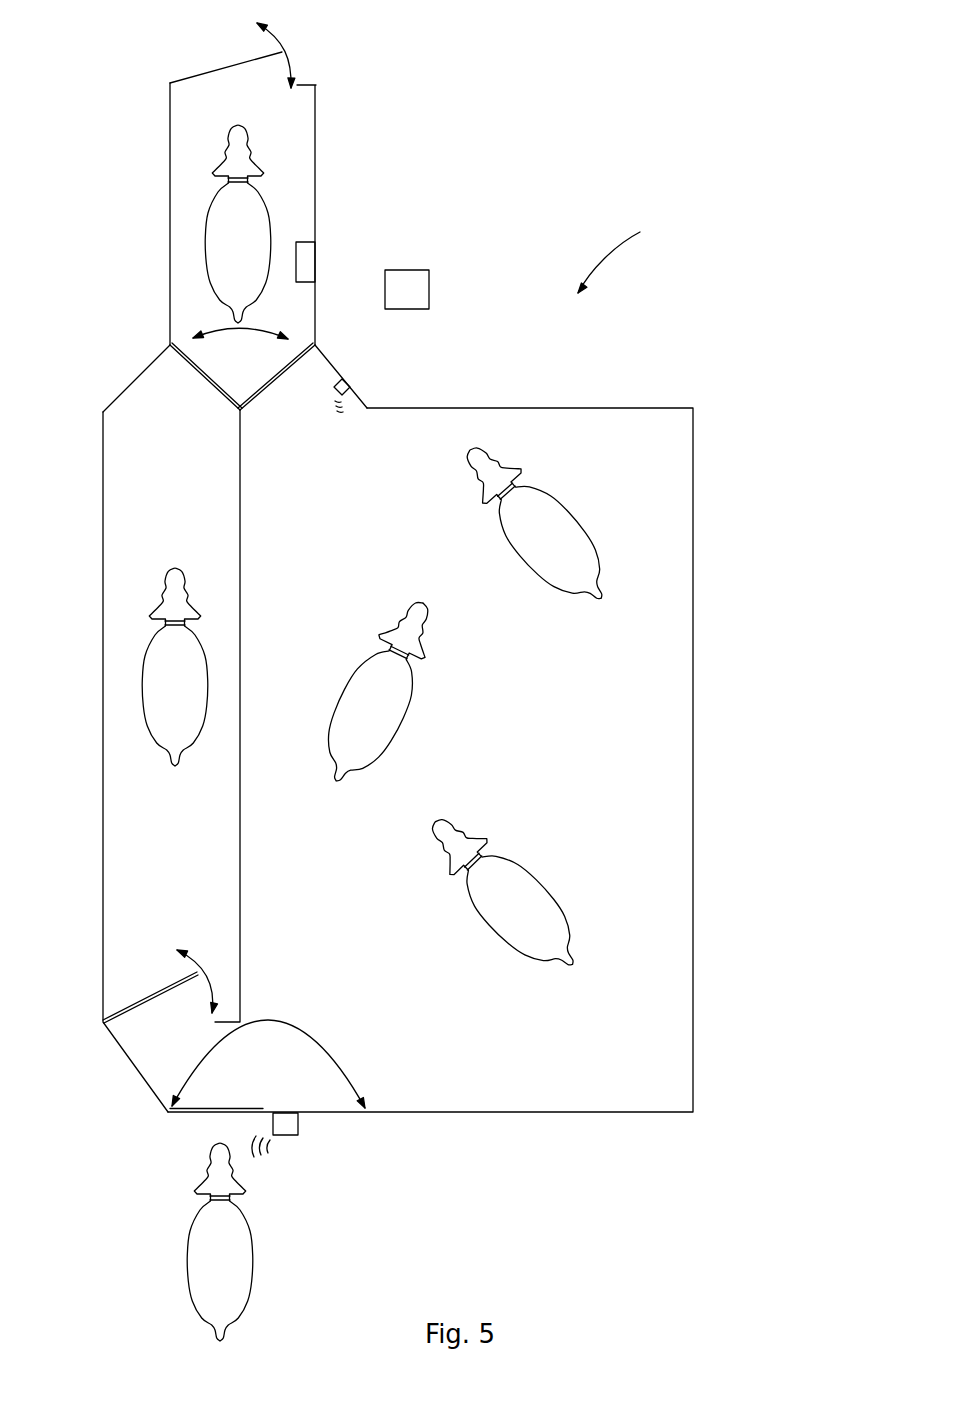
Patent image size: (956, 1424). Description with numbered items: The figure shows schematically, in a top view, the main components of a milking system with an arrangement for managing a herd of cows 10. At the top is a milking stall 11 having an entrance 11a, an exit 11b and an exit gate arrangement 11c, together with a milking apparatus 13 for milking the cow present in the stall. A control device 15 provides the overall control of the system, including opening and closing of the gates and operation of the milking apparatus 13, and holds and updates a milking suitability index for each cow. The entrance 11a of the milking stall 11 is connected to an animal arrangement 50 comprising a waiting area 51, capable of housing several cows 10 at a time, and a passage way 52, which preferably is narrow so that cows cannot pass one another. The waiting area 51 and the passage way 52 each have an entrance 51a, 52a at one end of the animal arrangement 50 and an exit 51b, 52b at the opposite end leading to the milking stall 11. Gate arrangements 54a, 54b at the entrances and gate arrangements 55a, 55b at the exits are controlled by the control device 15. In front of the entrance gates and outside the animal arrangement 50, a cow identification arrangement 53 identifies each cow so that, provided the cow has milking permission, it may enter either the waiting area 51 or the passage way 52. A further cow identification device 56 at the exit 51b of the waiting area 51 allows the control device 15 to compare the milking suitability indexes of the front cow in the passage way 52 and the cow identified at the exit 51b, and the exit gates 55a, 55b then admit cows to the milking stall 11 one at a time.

The cow 10 is at (216, 199).
The milking stall 11 is at (315, 156).
The entrance 11a is at (240, 352).
The exit 11b is at (226, 75).
The exit gate arrangement 11c is at (222, 66).
The milking apparatus 13 is at (315, 262).
The control device 15 is at (430, 287).
The animal arrangement 50 is at (625, 256).
The waiting area 51 is at (430, 760).
The entrance of the waiting area 51a is at (268, 1064).
The exit of the waiting area 51b is at (327, 376).
The passage way 52 is at (171, 761).
The entrance of the passage way 52a is at (184, 991).
The exit of the passage way 52b is at (146, 378).
The cow identification arrangement 53 is at (298, 1126).
The gate arrangement 54a is at (250, 1108).
The gate arrangement 54b is at (133, 1010).
The gate arrangement 55a is at (264, 395).
The gate arrangement 55b is at (217, 395).
The cow identification device 56 is at (352, 383).